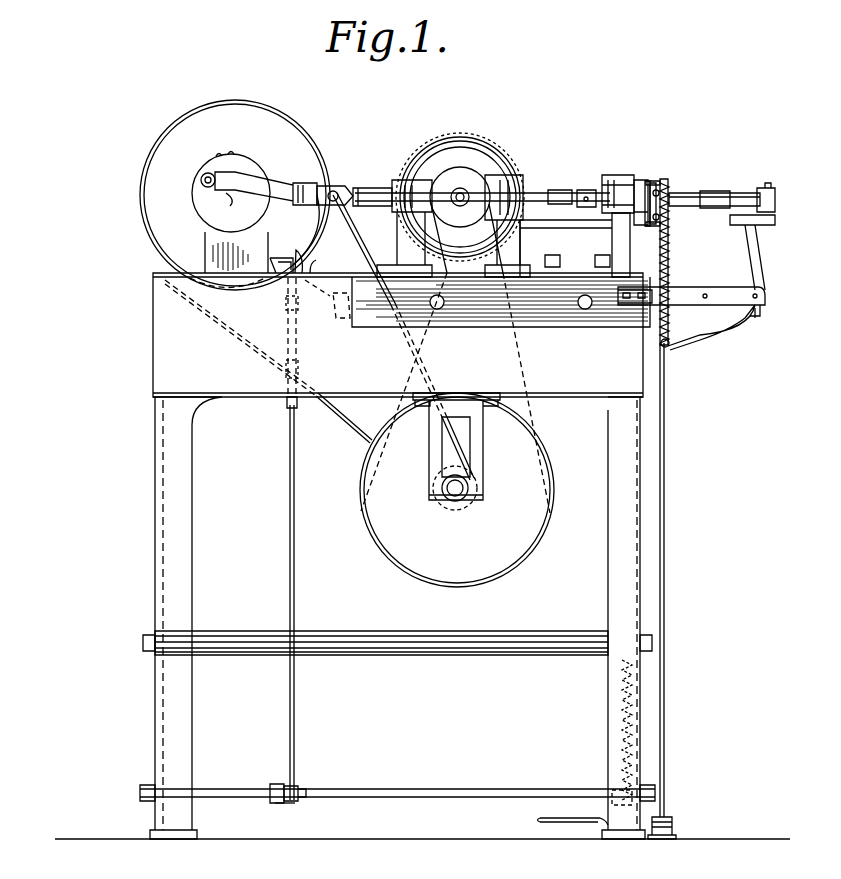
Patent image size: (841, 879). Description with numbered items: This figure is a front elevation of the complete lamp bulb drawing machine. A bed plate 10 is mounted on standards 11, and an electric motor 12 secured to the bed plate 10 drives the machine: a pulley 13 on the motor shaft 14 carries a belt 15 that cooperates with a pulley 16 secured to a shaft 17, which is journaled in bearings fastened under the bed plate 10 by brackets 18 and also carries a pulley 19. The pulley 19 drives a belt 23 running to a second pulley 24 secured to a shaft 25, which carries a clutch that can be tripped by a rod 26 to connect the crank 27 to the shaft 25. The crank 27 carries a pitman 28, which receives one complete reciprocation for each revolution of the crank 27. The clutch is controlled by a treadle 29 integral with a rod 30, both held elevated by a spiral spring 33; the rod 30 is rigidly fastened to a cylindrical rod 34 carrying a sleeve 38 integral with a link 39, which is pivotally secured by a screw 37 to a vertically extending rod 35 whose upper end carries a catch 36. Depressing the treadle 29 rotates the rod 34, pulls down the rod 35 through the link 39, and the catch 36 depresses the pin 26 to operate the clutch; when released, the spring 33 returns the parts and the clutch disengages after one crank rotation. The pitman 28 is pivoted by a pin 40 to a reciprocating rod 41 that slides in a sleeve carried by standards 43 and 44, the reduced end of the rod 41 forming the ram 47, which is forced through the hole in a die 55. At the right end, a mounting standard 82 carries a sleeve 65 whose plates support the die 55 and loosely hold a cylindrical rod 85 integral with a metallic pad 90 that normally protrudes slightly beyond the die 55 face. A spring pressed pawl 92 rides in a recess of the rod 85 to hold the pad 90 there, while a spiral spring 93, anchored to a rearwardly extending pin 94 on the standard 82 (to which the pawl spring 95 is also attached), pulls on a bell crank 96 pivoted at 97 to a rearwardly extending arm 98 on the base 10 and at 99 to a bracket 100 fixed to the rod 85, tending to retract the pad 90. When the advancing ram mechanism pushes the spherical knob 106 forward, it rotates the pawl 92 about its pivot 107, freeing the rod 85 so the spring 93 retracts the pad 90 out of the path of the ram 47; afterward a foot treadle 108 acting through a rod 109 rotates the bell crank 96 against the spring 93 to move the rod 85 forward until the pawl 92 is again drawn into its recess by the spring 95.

The machine bed plate 10 is at (172, 305).
The standards 11 is at (155, 476).
The electric motor 12 is at (483, 146).
The pulley 13 is at (458, 188).
The shaft 14 is at (420, 163).
The belt 15 is at (520, 357).
The pulley 16 is at (511, 550).
The shaft 17 is at (455, 501).
The brackets 18 is at (484, 456).
The pulley 19 is at (442, 503).
The belt 23 is at (341, 420).
The second pulley 24 is at (166, 213).
The shaft 25 is at (226, 198).
The rod 26 is at (284, 262).
The crank 27 is at (243, 158).
The pitman 28 is at (303, 185).
The treadle 29 is at (560, 828).
The rod 30 is at (640, 778).
The spiral spring 33 is at (622, 696).
The cylindrical rod 34 is at (490, 789).
The vertically extending rod 35 is at (296, 552).
The catch 36 is at (306, 256).
The screw 37 is at (303, 790).
The sleeve 38 is at (276, 784).
The link 39 is at (286, 803).
The pin 40 is at (338, 189).
The reciprocating rod 41 is at (373, 190).
The standard 43 is at (402, 236).
The standard 44 is at (500, 237).
The ram 47 is at (566, 193).
The die 55 is at (620, 178).
The sleeve 65 is at (674, 192).
The mounting standard 82 is at (600, 236).
The cylindrical rod 85 is at (740, 192).
The metallic pad 90 is at (590, 190).
The spring pressed pawl 92 is at (652, 183).
The spiral spring 93 is at (670, 256).
The pin 94 is at (658, 190).
The spring 95 is at (646, 190).
The bell crank 96 is at (728, 312).
The pivot 97 is at (757, 312).
The rearwardly extending arm 98 is at (700, 292).
The pivot 99 is at (734, 226).
The bracket 100 is at (768, 190).
The spherical knob 106 is at (640, 228).
The pivot 107 is at (668, 232).
The foot treadle 108 is at (674, 820).
The rod 109 is at (666, 535).